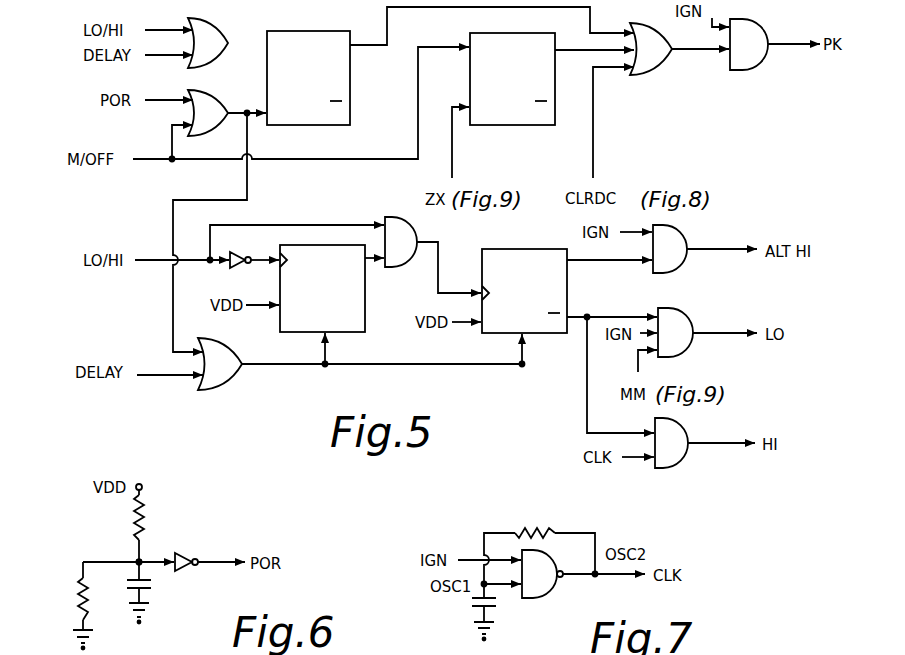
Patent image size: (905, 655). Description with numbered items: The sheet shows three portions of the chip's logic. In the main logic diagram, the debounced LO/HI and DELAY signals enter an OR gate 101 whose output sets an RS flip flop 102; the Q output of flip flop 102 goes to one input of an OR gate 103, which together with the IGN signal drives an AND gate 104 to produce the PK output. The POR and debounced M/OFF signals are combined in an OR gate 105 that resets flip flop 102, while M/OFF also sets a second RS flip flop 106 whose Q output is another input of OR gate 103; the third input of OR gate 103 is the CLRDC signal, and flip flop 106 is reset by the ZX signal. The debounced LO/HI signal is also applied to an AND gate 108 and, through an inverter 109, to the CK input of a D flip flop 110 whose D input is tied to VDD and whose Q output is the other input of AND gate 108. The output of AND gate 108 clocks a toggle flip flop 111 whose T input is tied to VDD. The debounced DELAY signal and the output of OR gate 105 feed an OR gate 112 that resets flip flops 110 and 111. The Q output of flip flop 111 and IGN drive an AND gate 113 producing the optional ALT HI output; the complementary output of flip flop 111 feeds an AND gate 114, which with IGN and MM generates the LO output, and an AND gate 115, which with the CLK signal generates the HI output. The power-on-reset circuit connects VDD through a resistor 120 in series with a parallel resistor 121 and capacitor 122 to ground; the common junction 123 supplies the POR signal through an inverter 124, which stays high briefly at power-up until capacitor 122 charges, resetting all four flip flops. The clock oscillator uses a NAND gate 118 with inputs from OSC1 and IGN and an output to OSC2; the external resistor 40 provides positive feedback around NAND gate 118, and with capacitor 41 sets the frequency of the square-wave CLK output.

In FIG. 5, the OR gate 101 is at (215, 30).
In FIG. 5, the RS flip flop 102 is at (350, 78).
In FIG. 5, the OR gate 103 is at (650, 66).
In FIG. 5, the AND gate 104 is at (743, 50).
In FIG. 5, the OR gate 105 is at (205, 110).
In FIG. 5, the RS flip flop 106 is at (507, 114).
In FIG. 5, the AND gate 108 is at (397, 214).
In FIG. 5, the inverter 109 is at (240, 255).
In FIG. 5, the D flip flop 110 is at (350, 301).
In FIG. 5, the toggle flip flop 111 is at (545, 336).
In FIG. 5, the OR gate 112 is at (213, 377).
In FIG. 5, the AND gate 113 is at (662, 267).
In FIG. 5, the AND gate 114 is at (672, 327).
In FIG. 5, the AND gate 115 is at (670, 448).
In FIG. 6, the resistor 120 is at (150, 514).
In FIG. 6, the resistor 121 is at (78, 587).
In FIG. 6, the capacitor 122 is at (148, 593).
In FIG. 6, the common junction 123 is at (138, 560).
In FIG. 6, the inverter 124 is at (180, 552).
In FIG. 7, the resistor 40 is at (560, 513).
In FIG. 7, the capacitor 41 is at (473, 605).
In FIG. 7, the NAND gate 118 is at (528, 598).